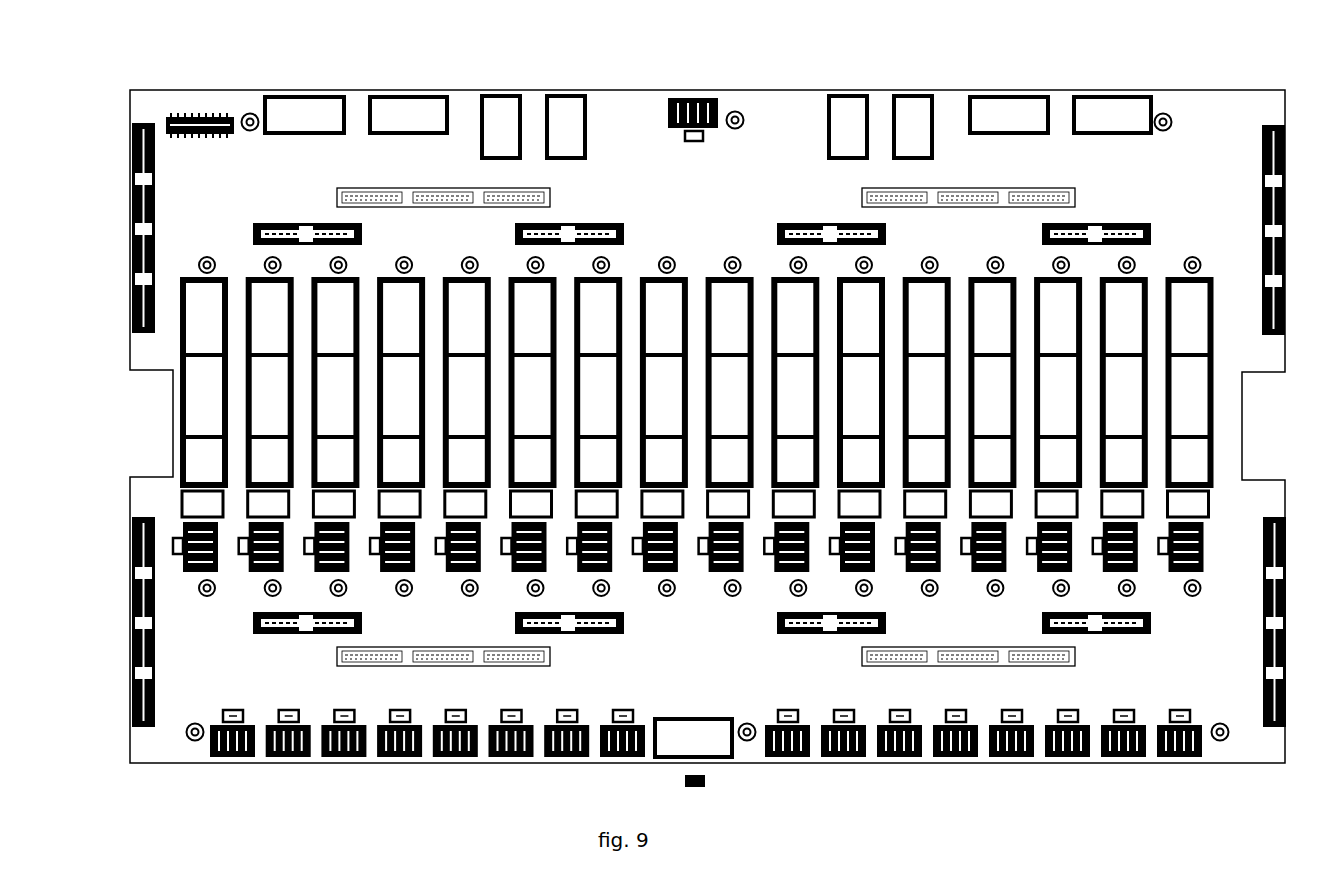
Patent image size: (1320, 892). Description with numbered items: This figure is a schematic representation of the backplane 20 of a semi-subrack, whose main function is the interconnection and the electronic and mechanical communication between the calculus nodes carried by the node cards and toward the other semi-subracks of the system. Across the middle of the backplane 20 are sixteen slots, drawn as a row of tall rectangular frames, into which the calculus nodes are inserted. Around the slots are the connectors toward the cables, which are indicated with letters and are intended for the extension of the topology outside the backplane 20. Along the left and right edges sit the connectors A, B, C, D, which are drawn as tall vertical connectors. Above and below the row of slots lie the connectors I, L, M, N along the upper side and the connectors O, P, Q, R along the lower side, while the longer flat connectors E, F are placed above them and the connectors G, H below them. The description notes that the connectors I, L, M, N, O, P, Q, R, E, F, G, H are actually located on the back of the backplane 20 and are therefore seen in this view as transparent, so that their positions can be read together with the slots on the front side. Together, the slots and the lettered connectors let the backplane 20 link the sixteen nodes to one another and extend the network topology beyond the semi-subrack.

The backplane 20 is at (704, 83).
The connector A is at (122, 228).
The connector B is at (122, 622).
The connector C is at (1289, 622).
The connector D is at (1289, 230).
The connector E is at (472, 191).
The connector F is at (995, 191).
The connector G is at (472, 663).
The connector H is at (997, 663).
The connector I is at (307, 252).
The connector L is at (569, 252).
The connector M is at (831, 252).
The connector N is at (1096, 252).
The connector O is at (307, 608).
The connector P is at (569, 608).
The connector Q is at (831, 608).
The connector R is at (1096, 608).